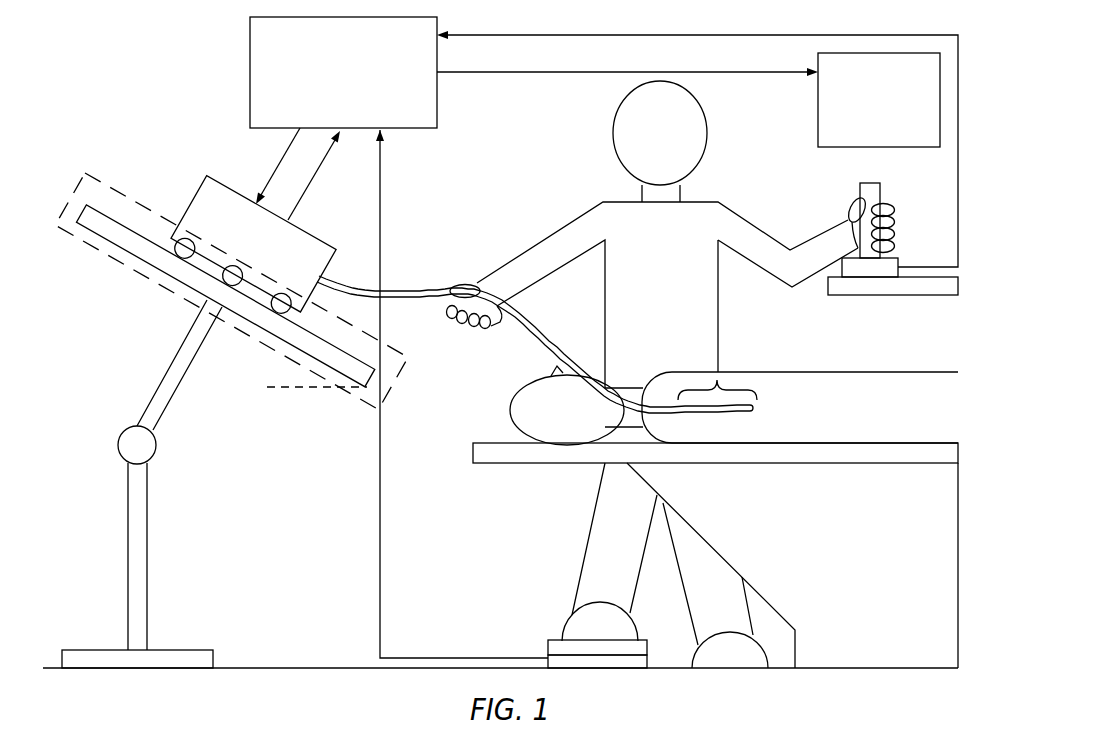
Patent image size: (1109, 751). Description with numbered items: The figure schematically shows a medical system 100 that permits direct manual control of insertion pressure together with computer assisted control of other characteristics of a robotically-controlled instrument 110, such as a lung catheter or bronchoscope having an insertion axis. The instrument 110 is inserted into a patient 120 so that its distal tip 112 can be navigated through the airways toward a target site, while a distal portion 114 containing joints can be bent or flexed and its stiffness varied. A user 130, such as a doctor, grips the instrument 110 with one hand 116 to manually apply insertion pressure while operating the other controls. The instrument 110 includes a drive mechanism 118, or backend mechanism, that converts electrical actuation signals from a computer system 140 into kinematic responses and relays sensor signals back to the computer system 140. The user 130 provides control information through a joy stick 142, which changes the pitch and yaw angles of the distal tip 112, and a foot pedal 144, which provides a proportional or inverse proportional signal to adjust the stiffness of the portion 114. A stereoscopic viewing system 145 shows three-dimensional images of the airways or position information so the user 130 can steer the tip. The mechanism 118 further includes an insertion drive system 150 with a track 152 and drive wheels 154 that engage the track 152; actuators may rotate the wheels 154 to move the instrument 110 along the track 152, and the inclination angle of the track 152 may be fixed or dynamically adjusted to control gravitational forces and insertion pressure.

The medical system 100 is at (189, 46).
The robotically-controlled instrument 110 is at (512, 322).
The distal tip 112 is at (757, 410).
The distal portion 114 is at (718, 378).
The hand of user 116 is at (435, 292).
The drive mechanism 118 is at (233, 255).
The patient 120 is at (876, 419).
The user 130 is at (643, 289).
The computer system 140 is at (325, 111).
The joy stick 142 is at (840, 267).
The foot pedal 144 is at (547, 650).
The stereoscopic viewing system 145 is at (862, 140).
The insertion drive system 150 is at (118, 192).
The track 152 is at (132, 253).
The drive wheels 154 is at (178, 238).